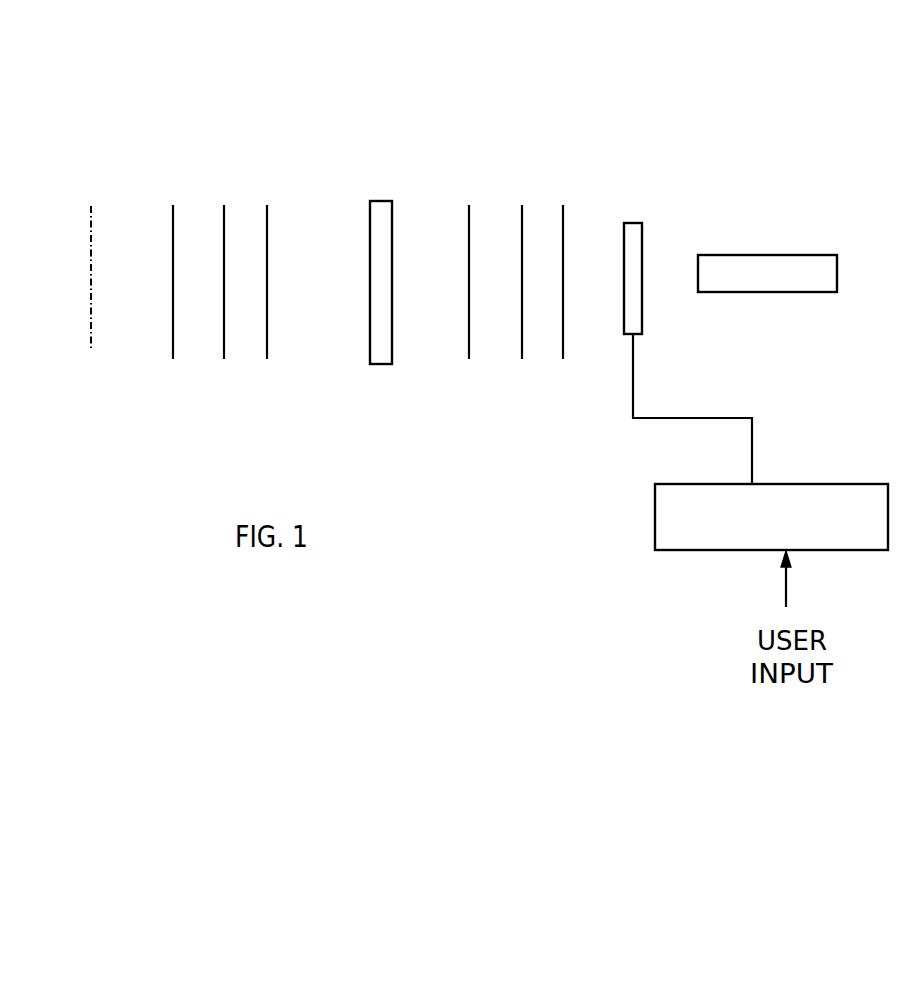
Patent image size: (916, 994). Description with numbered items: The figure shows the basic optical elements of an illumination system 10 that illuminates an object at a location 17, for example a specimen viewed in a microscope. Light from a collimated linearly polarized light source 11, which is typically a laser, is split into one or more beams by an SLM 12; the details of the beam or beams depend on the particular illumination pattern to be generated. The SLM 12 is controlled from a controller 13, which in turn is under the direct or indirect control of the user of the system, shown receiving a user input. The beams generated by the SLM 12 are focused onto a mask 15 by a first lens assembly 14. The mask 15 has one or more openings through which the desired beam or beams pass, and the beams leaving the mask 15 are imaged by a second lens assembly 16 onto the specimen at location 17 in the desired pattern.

The illumination system 10 is at (803, 80).
The collimated linearly polarized light source 11 is at (764, 281).
The SLM 12 is at (632, 230).
The controller 13 is at (688, 547).
The first lens assembly 14 is at (581, 368).
The mask 15 is at (386, 357).
The second lens assembly 16 is at (287, 366).
The location 17 is at (91, 346).